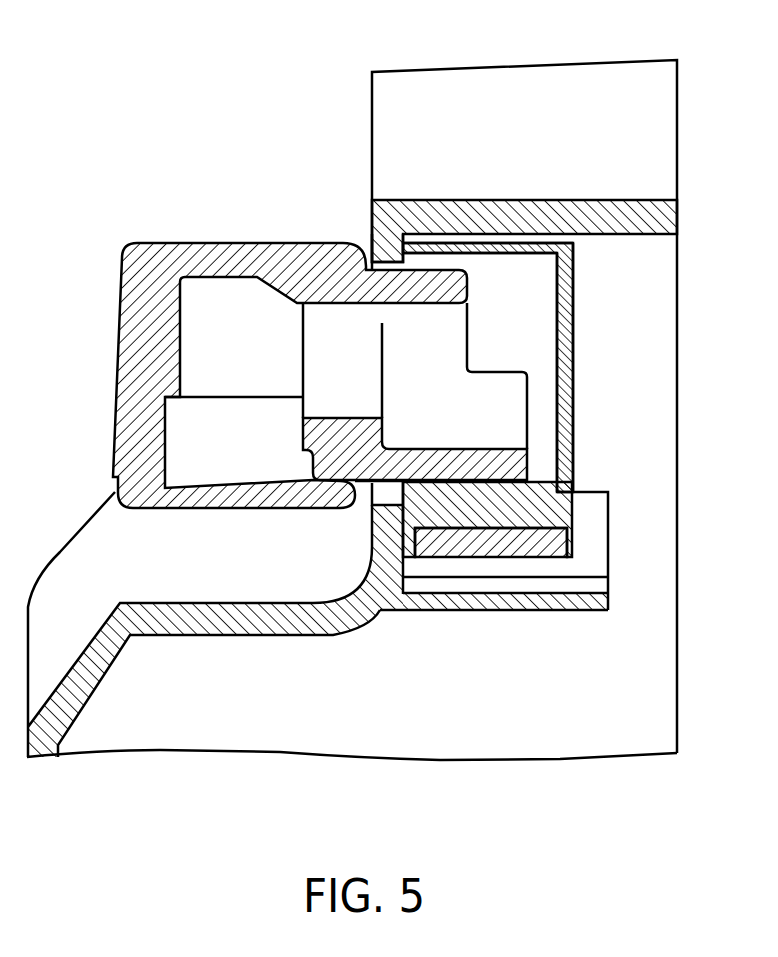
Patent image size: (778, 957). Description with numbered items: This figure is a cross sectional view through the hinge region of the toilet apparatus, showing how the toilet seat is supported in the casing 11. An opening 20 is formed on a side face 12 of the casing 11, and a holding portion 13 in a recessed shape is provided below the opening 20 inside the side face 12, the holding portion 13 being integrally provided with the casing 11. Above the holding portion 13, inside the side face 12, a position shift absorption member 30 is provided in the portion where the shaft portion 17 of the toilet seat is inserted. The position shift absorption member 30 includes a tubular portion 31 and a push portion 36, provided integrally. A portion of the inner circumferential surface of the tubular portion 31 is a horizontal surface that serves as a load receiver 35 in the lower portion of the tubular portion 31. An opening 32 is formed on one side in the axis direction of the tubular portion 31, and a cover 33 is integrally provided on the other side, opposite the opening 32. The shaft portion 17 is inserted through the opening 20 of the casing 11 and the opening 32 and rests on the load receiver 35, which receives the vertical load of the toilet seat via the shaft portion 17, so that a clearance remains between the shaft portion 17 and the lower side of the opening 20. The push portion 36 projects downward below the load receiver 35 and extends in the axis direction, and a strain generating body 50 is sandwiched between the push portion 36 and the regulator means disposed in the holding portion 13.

The casing 11 is at (458, 196).
The side face 12 is at (387, 553).
The holding portion 13 is at (583, 602).
The shaft portion 17 is at (298, 262).
The opening 20 is at (373, 498).
The position shift absorption member 30 is at (575, 306).
The tubular portion 31 is at (513, 250).
The opening 32 is at (418, 262).
The cover 33 is at (563, 388).
The load receiver 35 is at (477, 478).
The push portion 36 is at (531, 507).
The strain generating body 50 is at (478, 543).